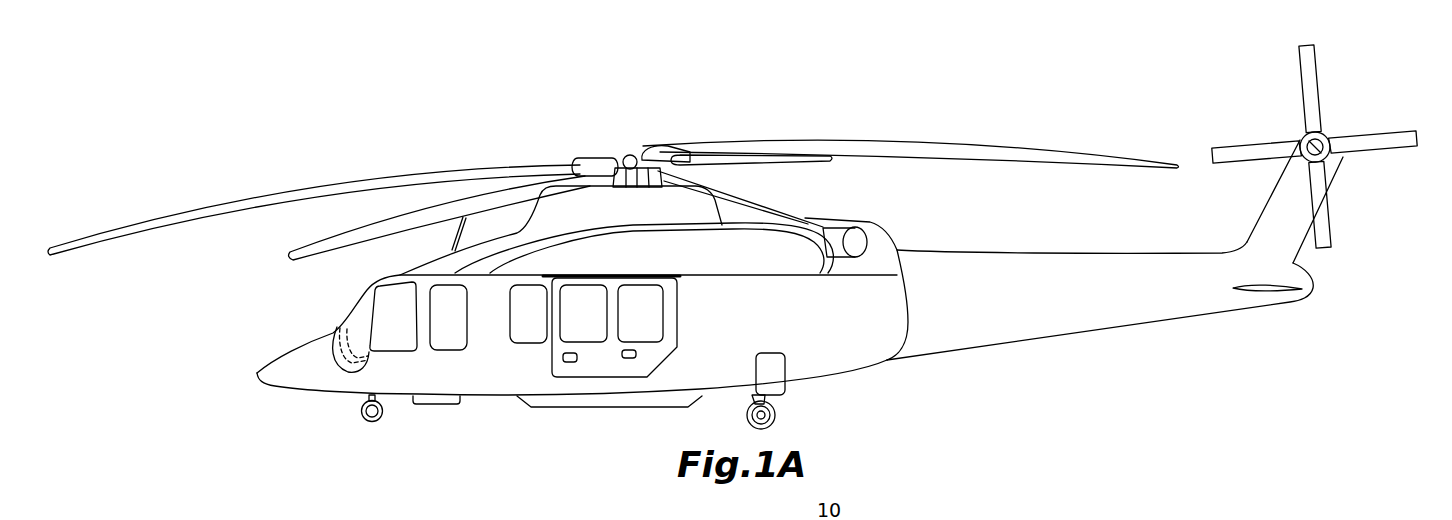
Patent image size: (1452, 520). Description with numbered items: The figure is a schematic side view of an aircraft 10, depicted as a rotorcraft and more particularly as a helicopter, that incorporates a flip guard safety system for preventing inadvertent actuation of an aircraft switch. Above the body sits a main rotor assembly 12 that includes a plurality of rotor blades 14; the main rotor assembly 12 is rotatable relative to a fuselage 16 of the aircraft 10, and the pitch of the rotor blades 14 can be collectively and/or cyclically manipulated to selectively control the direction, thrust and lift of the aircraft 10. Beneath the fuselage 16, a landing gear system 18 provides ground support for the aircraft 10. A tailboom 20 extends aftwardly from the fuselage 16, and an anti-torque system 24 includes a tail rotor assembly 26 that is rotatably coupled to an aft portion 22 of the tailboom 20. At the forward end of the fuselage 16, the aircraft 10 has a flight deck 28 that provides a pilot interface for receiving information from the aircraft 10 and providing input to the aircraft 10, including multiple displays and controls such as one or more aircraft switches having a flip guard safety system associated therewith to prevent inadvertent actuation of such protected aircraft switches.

The aircraft 10 is at (824, 108).
The main rotor assembly 12 is at (476, 164).
The rotor blades 14 is at (529, 162).
The fuselage 16 is at (828, 378).
The landing gear system 18 is at (372, 432).
The tailboom 20 is at (1040, 325).
The aft portion 22 is at (1270, 208).
The anti-torque system 24 is at (1323, 82).
The tail rotor assembly 26 is at (1251, 152).
The flight deck 28 is at (330, 330).